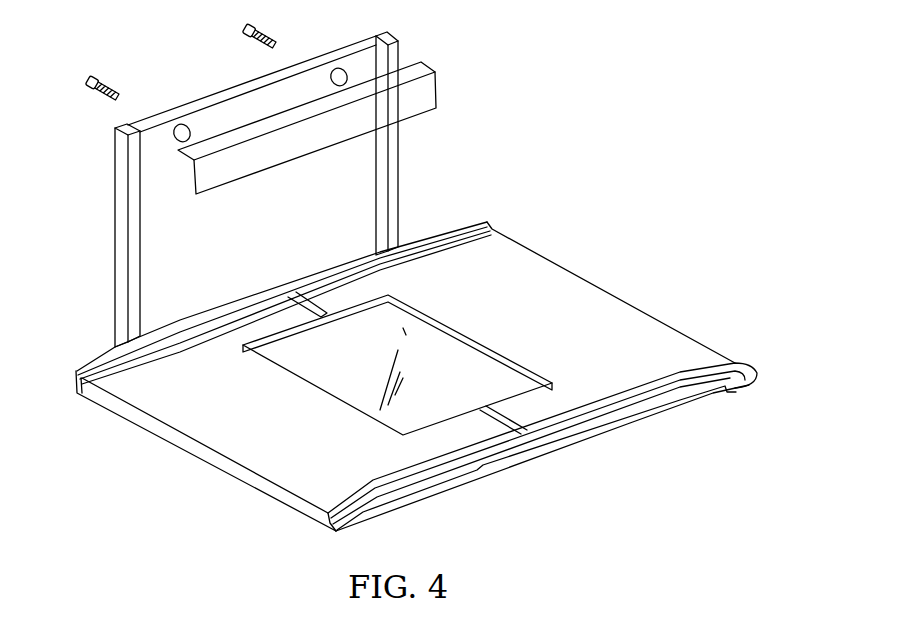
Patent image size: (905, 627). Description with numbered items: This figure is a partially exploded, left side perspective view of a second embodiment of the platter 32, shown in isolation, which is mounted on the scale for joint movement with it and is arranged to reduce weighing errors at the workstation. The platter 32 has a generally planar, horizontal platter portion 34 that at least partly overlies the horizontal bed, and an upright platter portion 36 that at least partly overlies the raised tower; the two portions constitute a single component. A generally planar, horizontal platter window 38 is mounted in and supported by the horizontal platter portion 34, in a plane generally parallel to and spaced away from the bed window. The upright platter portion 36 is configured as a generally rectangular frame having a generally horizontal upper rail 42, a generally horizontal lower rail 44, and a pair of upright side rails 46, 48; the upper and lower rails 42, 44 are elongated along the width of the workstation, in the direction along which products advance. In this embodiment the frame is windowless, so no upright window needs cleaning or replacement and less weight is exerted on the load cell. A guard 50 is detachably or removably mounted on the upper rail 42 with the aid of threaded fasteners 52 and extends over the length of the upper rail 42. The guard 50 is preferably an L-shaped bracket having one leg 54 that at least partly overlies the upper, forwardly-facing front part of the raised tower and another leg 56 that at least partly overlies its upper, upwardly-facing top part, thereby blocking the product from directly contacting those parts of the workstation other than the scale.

The platter 32 is at (522, 146).
The horizontal platter portion 34 is at (598, 310).
The upright platter portion 36 is at (104, 237).
The horizontal platter window 38 is at (430, 357).
The upper rail 42 is at (180, 105).
The lower rail 44 is at (208, 302).
The upright side rail 46 is at (114, 181).
The upright side rail 48 is at (400, 183).
The guard 50 is at (300, 146).
The threaded fasteners 52 is at (260, 27).
The leg 54 is at (437, 92).
The leg 56 is at (432, 70).